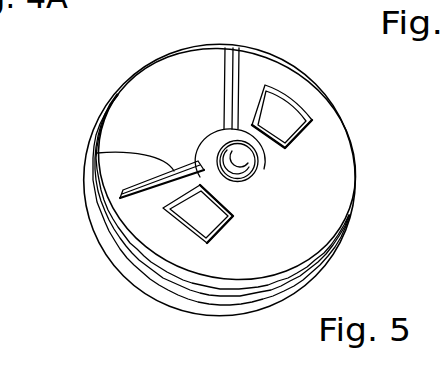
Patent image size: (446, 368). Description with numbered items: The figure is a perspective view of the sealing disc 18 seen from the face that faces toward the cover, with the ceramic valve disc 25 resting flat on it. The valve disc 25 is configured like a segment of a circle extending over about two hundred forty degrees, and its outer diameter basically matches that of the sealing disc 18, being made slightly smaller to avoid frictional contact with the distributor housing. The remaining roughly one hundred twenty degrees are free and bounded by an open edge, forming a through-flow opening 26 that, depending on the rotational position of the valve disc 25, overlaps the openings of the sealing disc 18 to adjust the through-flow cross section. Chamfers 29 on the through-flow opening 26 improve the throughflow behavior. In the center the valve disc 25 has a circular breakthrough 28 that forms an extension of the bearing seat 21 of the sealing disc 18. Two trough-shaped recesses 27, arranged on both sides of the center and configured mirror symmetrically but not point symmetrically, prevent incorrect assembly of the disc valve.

The sealing disc 18 is at (186, 104).
The bearing seat 21 is at (238, 190).
The valve disc 25 is at (226, 255).
The through-flow opening 26 is at (103, 181).
The trough-shaped recesses 27 is at (190, 224).
The circular breakthrough 28 is at (205, 143).
The chamfers 29 is at (229, 60).